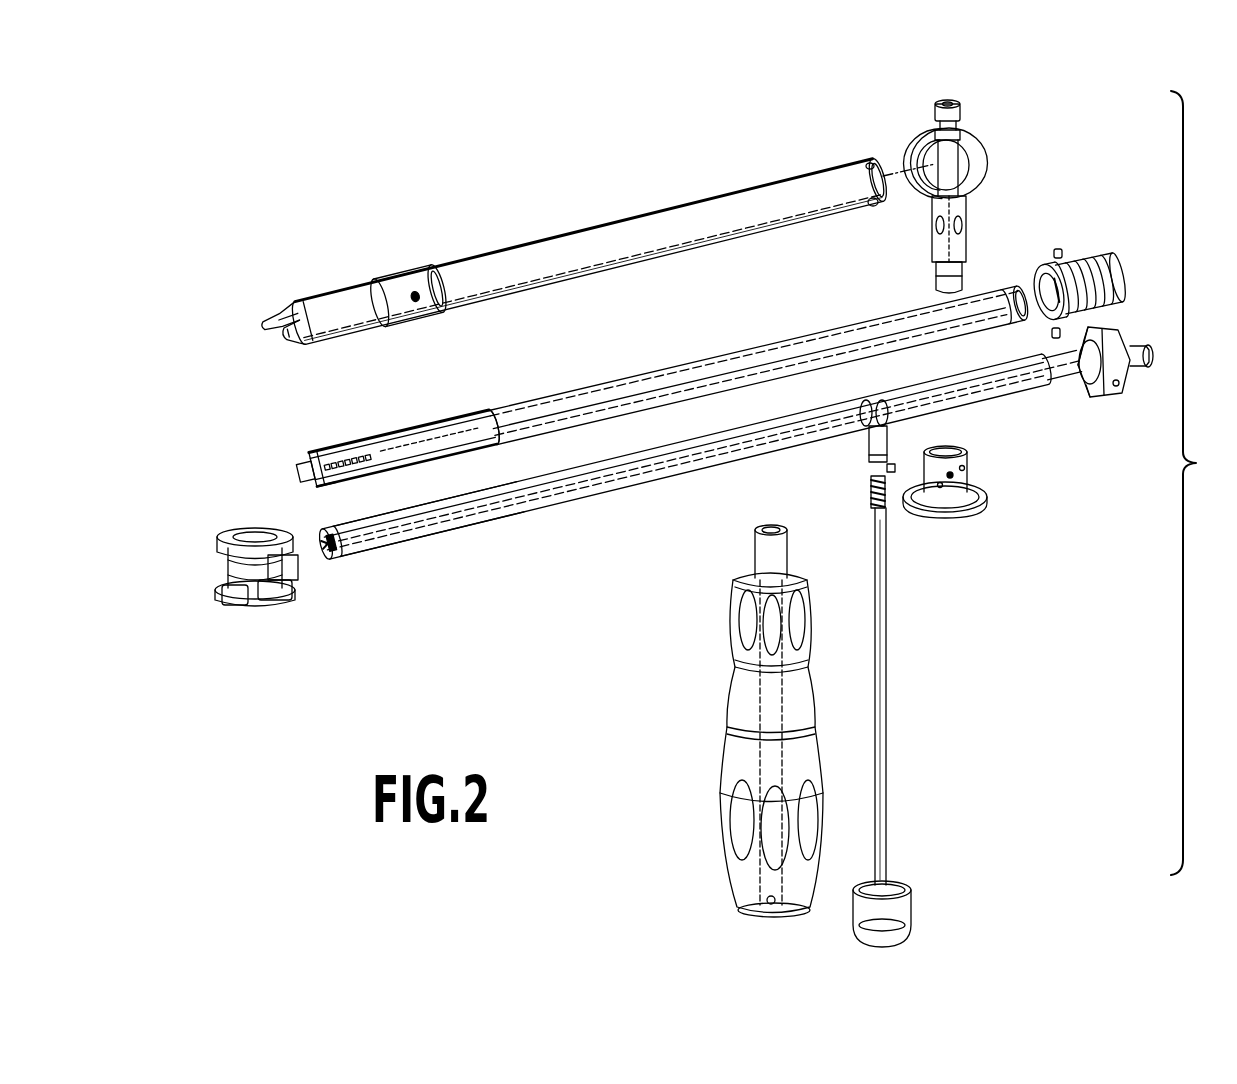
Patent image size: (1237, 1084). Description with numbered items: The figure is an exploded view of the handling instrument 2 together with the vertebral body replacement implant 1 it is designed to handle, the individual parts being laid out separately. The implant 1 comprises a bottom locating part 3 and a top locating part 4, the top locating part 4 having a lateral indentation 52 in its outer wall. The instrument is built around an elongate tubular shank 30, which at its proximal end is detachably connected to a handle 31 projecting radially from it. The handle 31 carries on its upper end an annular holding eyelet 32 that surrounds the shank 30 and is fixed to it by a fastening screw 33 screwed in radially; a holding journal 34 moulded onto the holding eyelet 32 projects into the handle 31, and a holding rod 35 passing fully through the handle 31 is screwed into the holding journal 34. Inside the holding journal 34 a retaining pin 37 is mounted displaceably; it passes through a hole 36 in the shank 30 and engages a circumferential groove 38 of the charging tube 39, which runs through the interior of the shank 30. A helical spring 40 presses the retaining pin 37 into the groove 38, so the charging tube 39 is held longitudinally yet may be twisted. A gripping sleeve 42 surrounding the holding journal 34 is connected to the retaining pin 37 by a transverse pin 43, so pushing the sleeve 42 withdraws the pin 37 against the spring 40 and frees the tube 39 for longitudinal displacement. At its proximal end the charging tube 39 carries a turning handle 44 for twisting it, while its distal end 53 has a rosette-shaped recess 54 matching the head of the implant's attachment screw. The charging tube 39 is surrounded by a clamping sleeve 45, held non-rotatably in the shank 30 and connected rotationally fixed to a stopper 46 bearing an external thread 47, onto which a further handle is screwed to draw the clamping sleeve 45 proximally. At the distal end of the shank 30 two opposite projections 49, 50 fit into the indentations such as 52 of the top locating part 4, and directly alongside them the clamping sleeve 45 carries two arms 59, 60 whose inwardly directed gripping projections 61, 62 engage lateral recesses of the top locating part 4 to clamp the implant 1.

The implant 1 is at (239, 552).
The handling instrument 2 is at (1197, 483).
The bottom locating part 3 is at (258, 605).
The top locating part 4 is at (270, 535).
The shank 30 is at (605, 228).
The handle 31 is at (745, 688).
The holding eyelet 32 is at (980, 150).
The fastening screw 33 is at (962, 103).
The holding journal 34 is at (960, 233).
The holding rod 35 is at (880, 668).
The hole 36 is at (874, 206).
The retaining pin 37 is at (887, 440).
The circumferential groove 38 is at (878, 401).
The charging tube 39 is at (656, 478).
The helical spring 40 is at (870, 496).
The gripping sleeve 42 is at (968, 463).
The transverse pin 43 is at (870, 466).
The turning handle 44 is at (1118, 392).
The clamping sleeve 45 is at (676, 380).
The stopper 46 is at (1060, 248).
The external thread 47 is at (1095, 262).
The projection 49 is at (275, 313).
The projection 50 is at (291, 336).
The indentation 52 is at (235, 568).
The distal end 53 is at (388, 549).
The recess 54 is at (322, 557).
The arm 59 is at (345, 448).
The arm 60 is at (372, 462).
The gripping projection 61 is at (297, 463).
The gripping projection 62 is at (318, 483).